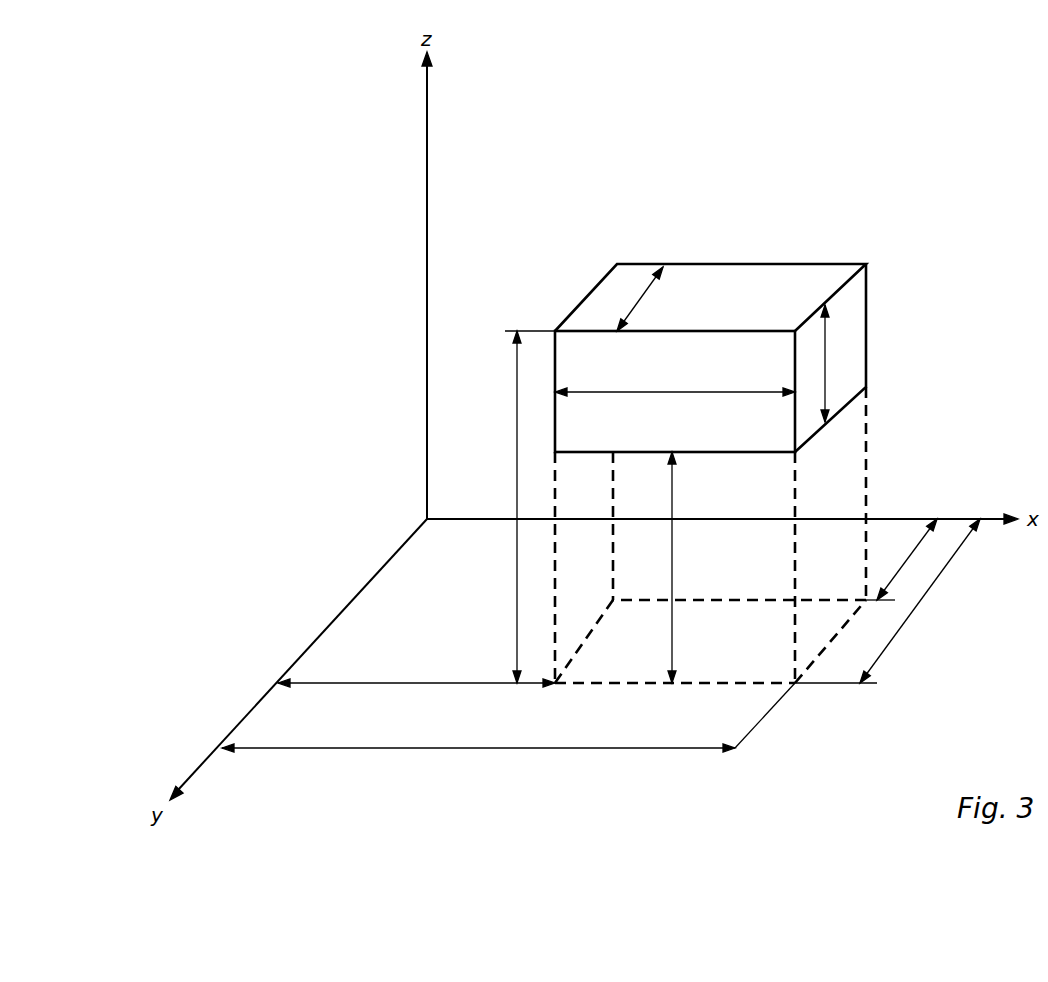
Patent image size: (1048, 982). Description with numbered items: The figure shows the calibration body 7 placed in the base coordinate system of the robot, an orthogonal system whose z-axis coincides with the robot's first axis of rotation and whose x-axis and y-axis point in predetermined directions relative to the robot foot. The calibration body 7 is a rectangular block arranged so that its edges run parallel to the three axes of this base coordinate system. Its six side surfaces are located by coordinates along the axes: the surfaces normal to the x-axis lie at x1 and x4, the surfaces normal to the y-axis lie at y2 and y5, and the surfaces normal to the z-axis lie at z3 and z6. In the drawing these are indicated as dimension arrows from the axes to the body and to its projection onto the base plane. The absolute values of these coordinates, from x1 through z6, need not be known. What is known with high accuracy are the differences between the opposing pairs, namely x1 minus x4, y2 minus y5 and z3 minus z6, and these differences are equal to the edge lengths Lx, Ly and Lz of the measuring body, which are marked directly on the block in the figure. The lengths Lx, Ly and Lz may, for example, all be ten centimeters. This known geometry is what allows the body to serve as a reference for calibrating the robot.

The calibration body 7 is at (775, 272).
The x coordinate of first side surface x1 is at (416, 672).
The x coordinate of fourth side surface x4 is at (478, 737).
The y coordinate of second side surface y2 is at (907, 559).
The y coordinate of fifth side surface y5 is at (920, 601).
The z coordinate of third side surface z3 is at (681, 567).
The z coordinate of sixth side surface z6 is at (501, 507).
The edge length in x direction Lx is at (675, 379).
The edge length in y direction Ly is at (642, 299).
The edge length in z direction Lz is at (837, 363).